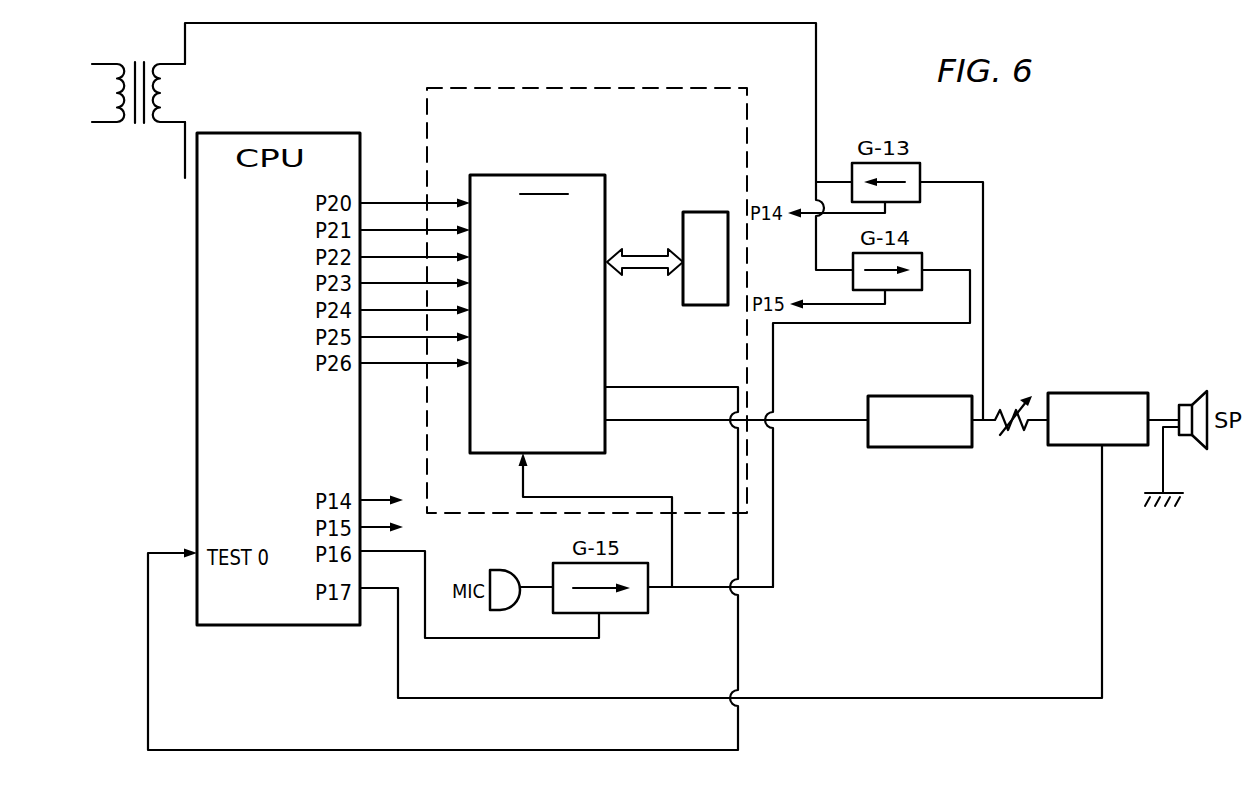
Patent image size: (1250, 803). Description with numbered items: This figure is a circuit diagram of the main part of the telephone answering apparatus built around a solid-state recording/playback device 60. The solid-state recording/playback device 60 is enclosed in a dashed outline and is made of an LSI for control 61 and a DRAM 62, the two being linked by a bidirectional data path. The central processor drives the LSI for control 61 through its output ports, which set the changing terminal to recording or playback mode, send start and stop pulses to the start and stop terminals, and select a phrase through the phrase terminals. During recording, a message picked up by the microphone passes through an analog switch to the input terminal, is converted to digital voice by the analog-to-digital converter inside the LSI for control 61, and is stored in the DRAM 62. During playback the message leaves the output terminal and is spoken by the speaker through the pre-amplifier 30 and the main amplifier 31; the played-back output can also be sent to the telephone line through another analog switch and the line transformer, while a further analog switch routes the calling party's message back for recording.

The pre-amplifier 30 is at (878, 396).
The main amplifier 31 is at (1100, 393).
The solid-state recording/playback device 60 is at (462, 88).
The LSI for control 61 is at (487, 175).
The DRAM 62 is at (680, 220).